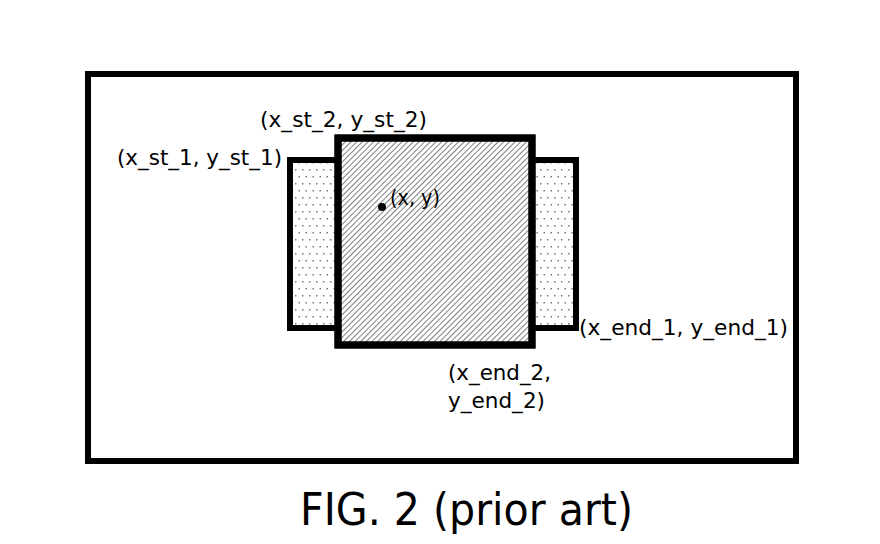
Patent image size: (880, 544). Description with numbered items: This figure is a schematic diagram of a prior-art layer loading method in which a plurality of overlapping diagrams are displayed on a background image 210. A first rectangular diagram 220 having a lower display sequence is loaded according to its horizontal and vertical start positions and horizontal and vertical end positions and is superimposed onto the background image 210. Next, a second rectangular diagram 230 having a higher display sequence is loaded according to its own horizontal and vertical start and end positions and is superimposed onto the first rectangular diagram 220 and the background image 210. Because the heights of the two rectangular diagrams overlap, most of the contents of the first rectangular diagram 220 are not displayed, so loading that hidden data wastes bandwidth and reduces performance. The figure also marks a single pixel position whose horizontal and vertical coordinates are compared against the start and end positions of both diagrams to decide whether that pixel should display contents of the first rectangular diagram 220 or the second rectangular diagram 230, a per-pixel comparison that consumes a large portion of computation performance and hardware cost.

The background image 210 is at (226, 73).
The first rectangular diagram 220 is at (303, 227).
The second rectangular diagram 230 is at (456, 135).